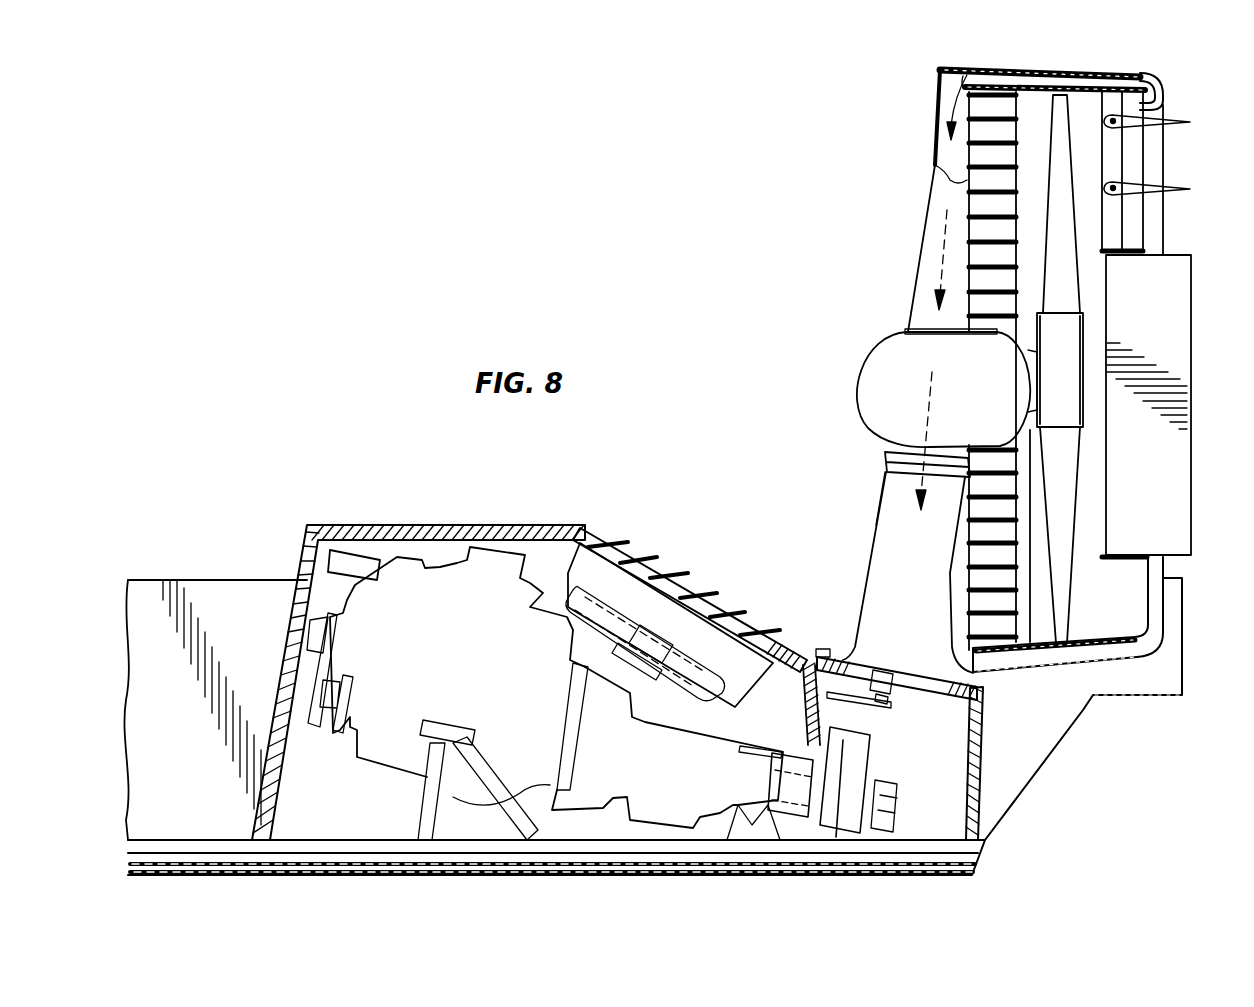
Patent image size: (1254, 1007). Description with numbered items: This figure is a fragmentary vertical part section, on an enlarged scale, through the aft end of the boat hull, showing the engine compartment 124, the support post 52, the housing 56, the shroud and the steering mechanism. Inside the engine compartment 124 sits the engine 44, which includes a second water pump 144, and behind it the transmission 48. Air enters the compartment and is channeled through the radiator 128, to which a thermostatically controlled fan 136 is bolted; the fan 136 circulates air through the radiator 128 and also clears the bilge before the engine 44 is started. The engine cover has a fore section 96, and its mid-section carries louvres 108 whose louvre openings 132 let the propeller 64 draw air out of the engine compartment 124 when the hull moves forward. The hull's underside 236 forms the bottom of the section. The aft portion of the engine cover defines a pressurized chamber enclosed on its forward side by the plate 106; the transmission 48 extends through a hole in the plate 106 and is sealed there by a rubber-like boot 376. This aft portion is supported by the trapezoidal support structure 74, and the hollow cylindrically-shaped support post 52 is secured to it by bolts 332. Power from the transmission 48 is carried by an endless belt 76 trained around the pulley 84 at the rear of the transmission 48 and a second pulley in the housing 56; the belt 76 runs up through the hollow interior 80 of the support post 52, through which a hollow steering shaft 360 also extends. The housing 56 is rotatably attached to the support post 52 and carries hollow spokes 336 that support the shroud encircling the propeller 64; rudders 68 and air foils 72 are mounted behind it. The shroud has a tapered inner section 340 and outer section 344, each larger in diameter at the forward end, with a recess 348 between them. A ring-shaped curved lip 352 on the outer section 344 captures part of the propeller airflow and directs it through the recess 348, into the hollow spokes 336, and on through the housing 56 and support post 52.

The engine 44 is at (465, 659).
The transmission 48 is at (676, 781).
The support post 52 is at (928, 541).
The housing 56 is at (880, 345).
The propeller 64 is at (1070, 450).
The rudders 68 is at (1158, 337).
The air foils 72 is at (1163, 120).
The trapezoidal support structure 74 is at (833, 710).
The endless belt 76 is at (883, 750).
The hollow interior 80 is at (872, 558).
The pulley 84 is at (877, 830).
The fore section 96 is at (425, 524).
The plate 106 is at (803, 698).
The louvres 108 is at (617, 542).
The engine compartment 124 is at (353, 804).
The radiator 128 is at (727, 643).
The louvre openings 132 is at (653, 570).
The fan 136 is at (697, 677).
The second water pump 144 is at (350, 560).
The underside 236 is at (780, 870).
The bolts 332 is at (818, 651).
The hollow spokes 336 is at (933, 190).
The inner section 340 is at (1030, 76).
The outer section 344 is at (1087, 118).
The recess 348 is at (1073, 73).
The curved lip 352 is at (1163, 653).
The hollow steering shaft 360 is at (897, 673).
The boot 376 is at (783, 733).